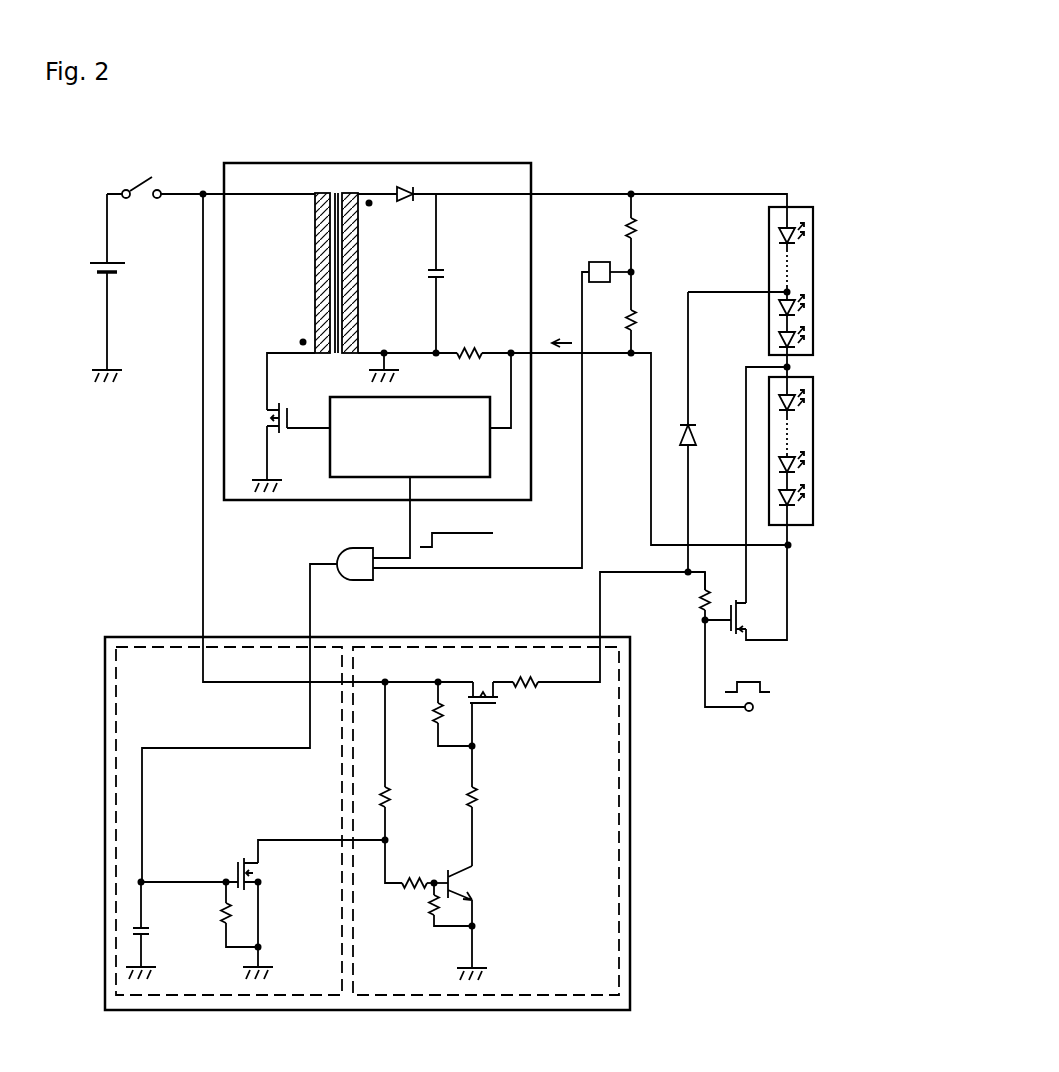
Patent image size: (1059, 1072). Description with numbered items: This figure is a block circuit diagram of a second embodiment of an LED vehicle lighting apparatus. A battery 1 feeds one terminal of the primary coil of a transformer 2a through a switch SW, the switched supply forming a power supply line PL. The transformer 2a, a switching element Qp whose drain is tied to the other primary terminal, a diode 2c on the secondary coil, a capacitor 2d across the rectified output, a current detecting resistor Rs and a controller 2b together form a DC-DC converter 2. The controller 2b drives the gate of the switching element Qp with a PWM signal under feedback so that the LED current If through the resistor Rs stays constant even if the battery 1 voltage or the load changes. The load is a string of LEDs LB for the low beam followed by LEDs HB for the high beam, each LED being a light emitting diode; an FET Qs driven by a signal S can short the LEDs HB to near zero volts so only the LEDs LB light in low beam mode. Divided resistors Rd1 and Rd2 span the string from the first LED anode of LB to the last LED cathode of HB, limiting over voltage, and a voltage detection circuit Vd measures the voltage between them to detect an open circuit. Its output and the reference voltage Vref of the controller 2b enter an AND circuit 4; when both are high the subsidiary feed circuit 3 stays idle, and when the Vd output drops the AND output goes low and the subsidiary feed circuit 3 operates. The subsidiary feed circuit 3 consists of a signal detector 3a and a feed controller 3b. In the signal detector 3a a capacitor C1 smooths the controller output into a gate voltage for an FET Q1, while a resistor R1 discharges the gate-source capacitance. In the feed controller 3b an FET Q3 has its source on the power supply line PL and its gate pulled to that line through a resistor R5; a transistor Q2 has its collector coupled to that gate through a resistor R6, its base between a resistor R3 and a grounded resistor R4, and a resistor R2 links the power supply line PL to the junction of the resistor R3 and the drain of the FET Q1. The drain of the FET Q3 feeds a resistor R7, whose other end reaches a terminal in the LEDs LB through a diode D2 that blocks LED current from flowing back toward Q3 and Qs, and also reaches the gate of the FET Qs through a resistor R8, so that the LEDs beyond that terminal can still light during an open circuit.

The battery 1 is at (100, 262).
The switch SW is at (134, 201).
The power supply line PL is at (178, 194).
The DC-DC converter 2 is at (386, 163).
The transformer 2a is at (315, 272).
The controller 2b is at (340, 397).
The diode 2c is at (403, 208).
The capacitor 2d is at (449, 273).
The resistor Rs is at (469, 342).
The switching element Qp is at (279, 447).
The AND circuit 4 is at (348, 549).
The reference voltage Vref is at (456, 528).
The voltage detection circuit Vd is at (611, 260).
The divided resistor Rd1 is at (652, 233).
The divided resistor Rd2 is at (651, 312).
The LED current If is at (562, 332).
The LEDs LB is at (829, 274).
The element LED is at (800, 348).
The LEDs HB is at (800, 505).
The diode D2 is at (702, 432).
The resistor R8 is at (708, 639).
The FET Qs is at (725, 604).
The signal S is at (747, 683).
The subsidiary feed circuit 3 is at (382, 637).
The signal detector 3a is at (116, 822).
The feed controller 3b is at (630, 818).
The capacitor C1 is at (152, 929).
The resistor R1 is at (219, 913).
The FET Q1 is at (311, 909).
The FET Q3 is at (480, 701).
The resistor R7 is at (524, 697).
The resistor R5 is at (437, 716).
The resistor R6 is at (487, 806).
The resistor R2 is at (400, 782).
The resistor R3 is at (421, 869).
The transistor Q2 is at (475, 923).
The resistor R4 is at (442, 918).